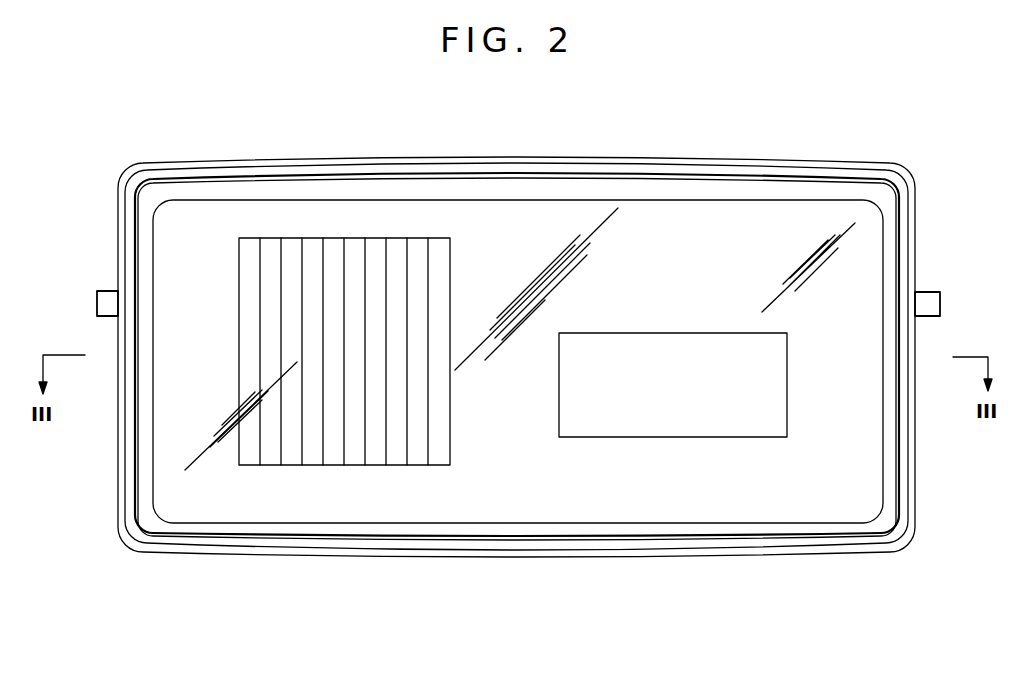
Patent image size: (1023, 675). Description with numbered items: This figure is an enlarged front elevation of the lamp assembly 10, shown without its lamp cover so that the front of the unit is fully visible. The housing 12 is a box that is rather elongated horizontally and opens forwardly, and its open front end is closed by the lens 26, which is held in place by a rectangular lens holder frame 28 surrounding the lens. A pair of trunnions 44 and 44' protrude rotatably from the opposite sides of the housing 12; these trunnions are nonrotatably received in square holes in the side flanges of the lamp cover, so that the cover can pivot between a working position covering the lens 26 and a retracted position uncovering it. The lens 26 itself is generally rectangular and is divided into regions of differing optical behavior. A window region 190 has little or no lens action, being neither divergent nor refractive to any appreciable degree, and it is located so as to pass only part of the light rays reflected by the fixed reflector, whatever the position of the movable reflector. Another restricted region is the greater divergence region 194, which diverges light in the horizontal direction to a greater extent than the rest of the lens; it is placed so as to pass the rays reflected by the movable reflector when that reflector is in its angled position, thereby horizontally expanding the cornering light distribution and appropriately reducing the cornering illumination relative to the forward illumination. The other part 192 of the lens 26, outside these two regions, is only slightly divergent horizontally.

The lamp assembly 10 is at (921, 167).
The housing 12 is at (288, 160).
The lens holder frame 28 is at (470, 166).
The other part of the lens 192 is at (705, 213).
The lens 26 is at (789, 214).
The greater divergence region 194 is at (355, 250).
The window region 190 is at (727, 428).
The trunnion 44' is at (88, 272).
The trunnion 44 is at (949, 279).